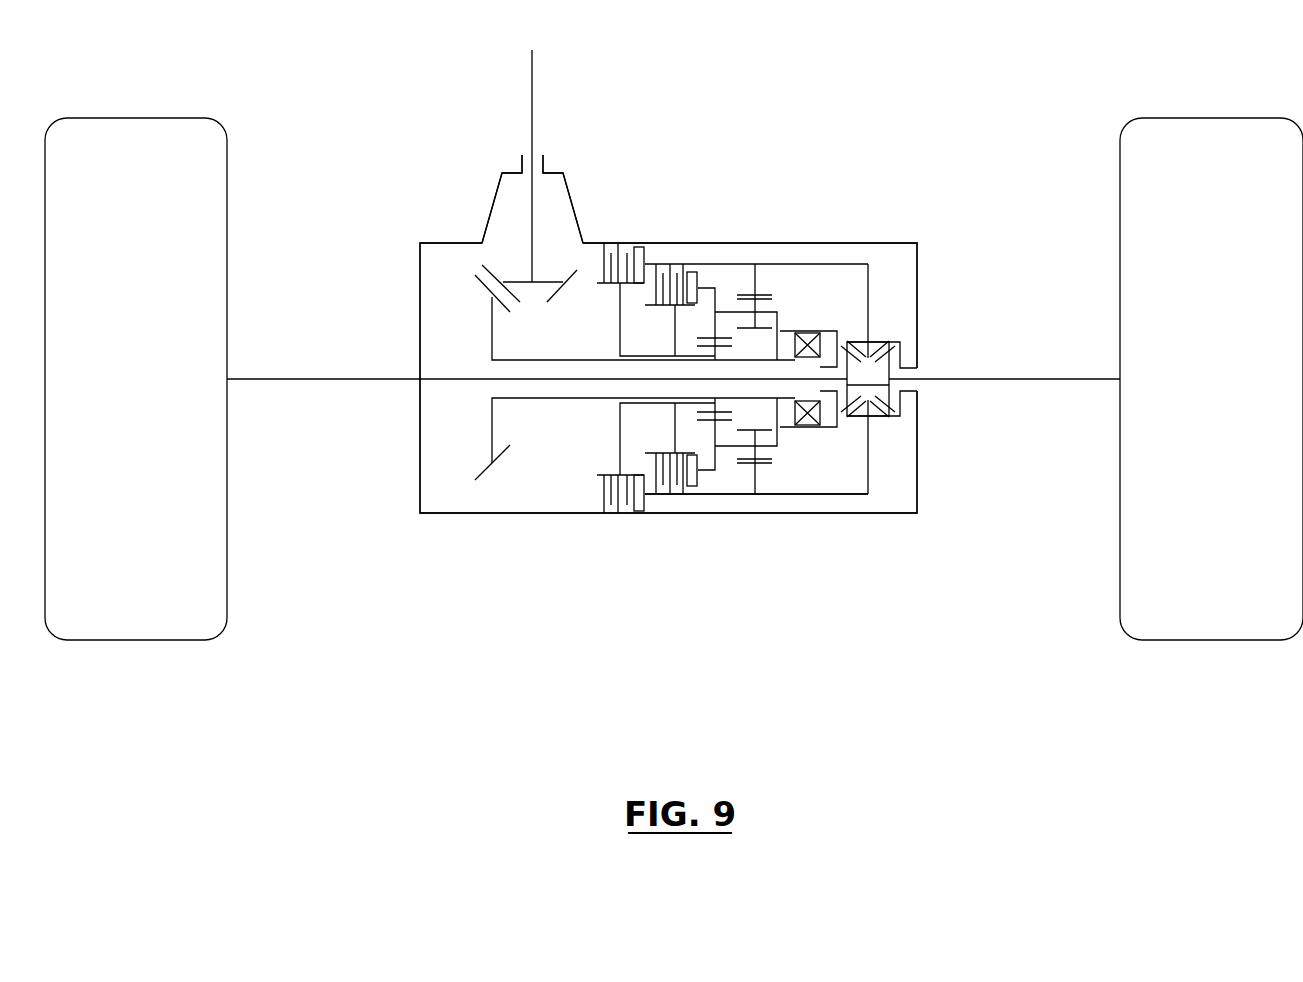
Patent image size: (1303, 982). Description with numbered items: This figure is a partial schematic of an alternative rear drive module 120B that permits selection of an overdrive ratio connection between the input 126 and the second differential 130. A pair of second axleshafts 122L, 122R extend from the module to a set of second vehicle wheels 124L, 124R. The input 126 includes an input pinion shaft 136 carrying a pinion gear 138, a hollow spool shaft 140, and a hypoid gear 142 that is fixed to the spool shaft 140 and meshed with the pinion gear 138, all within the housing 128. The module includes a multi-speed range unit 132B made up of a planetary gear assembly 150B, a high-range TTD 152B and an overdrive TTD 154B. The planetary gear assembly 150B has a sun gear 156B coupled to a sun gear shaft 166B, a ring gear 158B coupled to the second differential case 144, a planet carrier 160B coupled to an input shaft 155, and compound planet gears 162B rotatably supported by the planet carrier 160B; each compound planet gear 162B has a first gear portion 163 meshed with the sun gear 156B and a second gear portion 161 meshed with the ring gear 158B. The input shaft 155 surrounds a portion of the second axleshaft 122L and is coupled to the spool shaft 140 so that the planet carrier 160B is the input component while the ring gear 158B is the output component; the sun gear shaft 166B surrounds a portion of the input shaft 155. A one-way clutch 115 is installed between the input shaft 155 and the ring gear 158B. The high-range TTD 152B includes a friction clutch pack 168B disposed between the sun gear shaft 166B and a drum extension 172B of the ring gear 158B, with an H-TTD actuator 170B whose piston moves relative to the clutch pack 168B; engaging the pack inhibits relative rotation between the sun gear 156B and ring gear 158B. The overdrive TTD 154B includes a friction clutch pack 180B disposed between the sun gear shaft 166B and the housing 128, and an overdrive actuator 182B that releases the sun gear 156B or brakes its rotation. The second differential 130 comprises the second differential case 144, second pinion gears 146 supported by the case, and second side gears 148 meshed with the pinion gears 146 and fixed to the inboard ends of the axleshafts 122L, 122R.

The rear drive module 120B is at (940, 110).
The second vehicle wheel 124L is at (128, 125).
The second vehicle wheel 124R is at (1212, 128).
The second axleshaft 122L is at (305, 375).
The second axleshaft 122R is at (1070, 375).
The input pinion shaft 136 is at (530, 98).
The input 126 is at (502, 213).
The housing 128 is at (918, 272).
The pinion gear 138 is at (579, 269).
The hollow spool shaft 140 is at (512, 358).
The input shaft 155 is at (555, 397).
The hypoid gear 142 is at (481, 478).
The overdrive TTD 154B is at (640, 240).
The friction clutch pack 168B is at (676, 270).
The sun gear shaft 166B is at (641, 356).
The compound planet gears 162B is at (728, 309).
The high-range TTD 152B is at (703, 271).
The planetary gear assembly 150B is at (778, 301).
The one-way clutch 115 is at (778, 317).
The planet carrier 160B is at (815, 333).
The friction clutch pack 180B is at (598, 474).
The overdrive actuator 182B is at (639, 511).
The H-TTD actuator 170B is at (690, 487).
The first gear portion 163 is at (712, 473).
The sun gear 156B is at (723, 407).
The second gear portion 161 is at (763, 452).
The ring gear 158B is at (758, 477).
The drum extension 172B is at (777, 494).
The multi-speed range unit 132B is at (722, 498).
The second differential 130 is at (905, 344).
The second differential case 144 is at (890, 414).
The second pinion gears 146 is at (878, 425).
The second side gears 148 is at (900, 371).